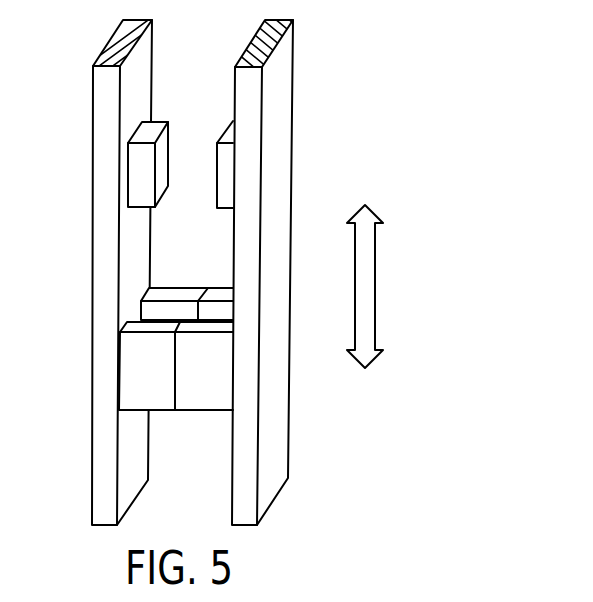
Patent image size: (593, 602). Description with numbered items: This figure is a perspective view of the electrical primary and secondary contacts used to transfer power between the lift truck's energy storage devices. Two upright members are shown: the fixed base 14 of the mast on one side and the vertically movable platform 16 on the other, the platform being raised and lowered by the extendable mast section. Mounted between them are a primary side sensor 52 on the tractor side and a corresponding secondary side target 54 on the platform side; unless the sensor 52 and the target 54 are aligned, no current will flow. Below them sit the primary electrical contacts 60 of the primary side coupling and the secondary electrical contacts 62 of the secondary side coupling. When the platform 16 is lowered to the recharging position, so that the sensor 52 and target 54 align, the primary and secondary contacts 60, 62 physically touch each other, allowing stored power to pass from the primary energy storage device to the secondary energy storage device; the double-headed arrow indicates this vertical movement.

The fixed base 14 is at (90, 210).
The vertically movable platform 16 is at (287, 168).
The primary side sensor 52 is at (158, 122).
The secondary side target 54 is at (217, 142).
The primary electrical contacts 60 is at (132, 325).
The secondary electrical contacts 62 is at (217, 323).